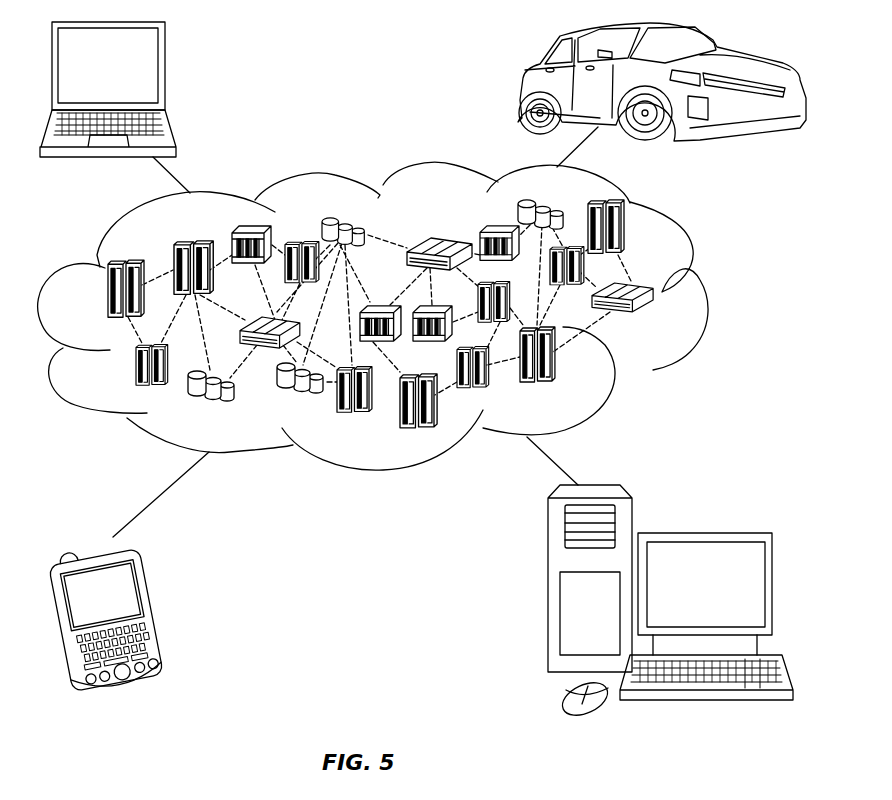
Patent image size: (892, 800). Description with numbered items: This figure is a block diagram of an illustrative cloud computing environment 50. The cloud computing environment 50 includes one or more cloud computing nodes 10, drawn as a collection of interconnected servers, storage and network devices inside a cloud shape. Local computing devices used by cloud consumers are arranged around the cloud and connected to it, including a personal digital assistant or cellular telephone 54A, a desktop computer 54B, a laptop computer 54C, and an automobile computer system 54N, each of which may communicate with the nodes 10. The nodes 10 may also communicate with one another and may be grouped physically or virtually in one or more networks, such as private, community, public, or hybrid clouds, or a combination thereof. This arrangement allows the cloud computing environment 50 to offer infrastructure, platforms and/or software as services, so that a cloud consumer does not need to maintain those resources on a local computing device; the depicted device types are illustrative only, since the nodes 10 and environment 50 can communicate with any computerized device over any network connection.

The cloud computing node 10 is at (656, 320).
The cloud computing environment 50 is at (703, 294).
The personal digital assistant or cellular telephone 54A is at (161, 606).
The desktop computer 54B is at (702, 532).
The laptop computer 54C is at (165, 70).
The automobile computer system 54N is at (522, 82).